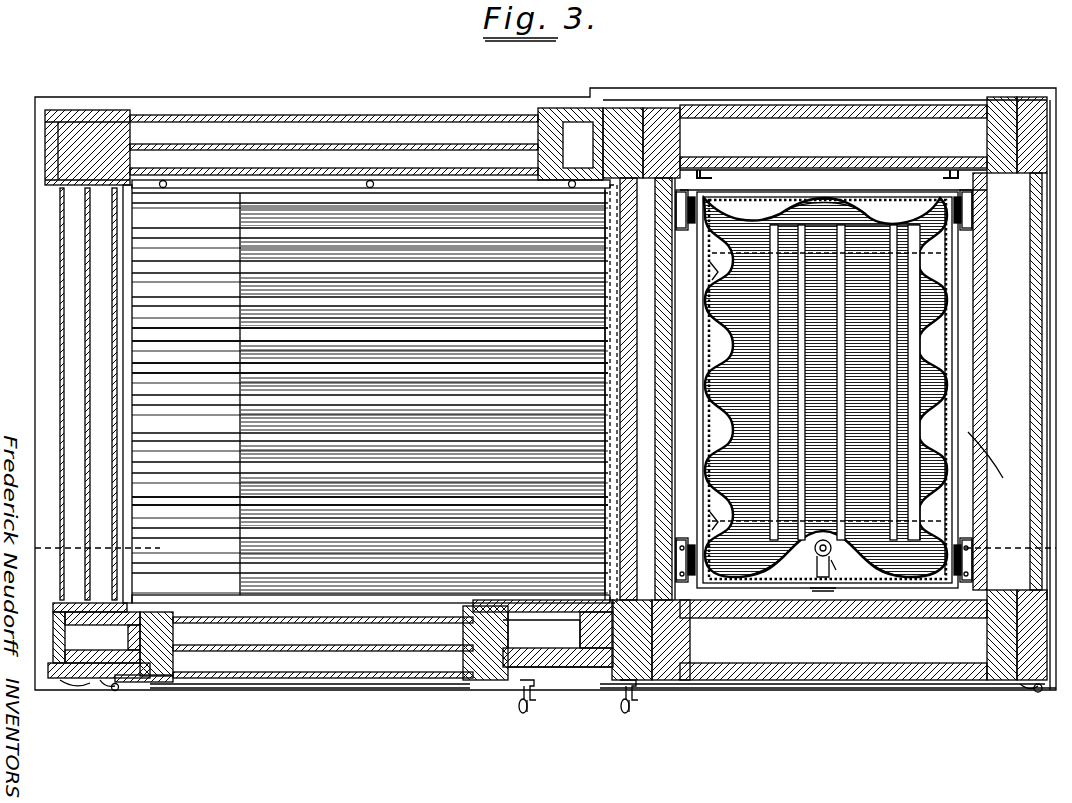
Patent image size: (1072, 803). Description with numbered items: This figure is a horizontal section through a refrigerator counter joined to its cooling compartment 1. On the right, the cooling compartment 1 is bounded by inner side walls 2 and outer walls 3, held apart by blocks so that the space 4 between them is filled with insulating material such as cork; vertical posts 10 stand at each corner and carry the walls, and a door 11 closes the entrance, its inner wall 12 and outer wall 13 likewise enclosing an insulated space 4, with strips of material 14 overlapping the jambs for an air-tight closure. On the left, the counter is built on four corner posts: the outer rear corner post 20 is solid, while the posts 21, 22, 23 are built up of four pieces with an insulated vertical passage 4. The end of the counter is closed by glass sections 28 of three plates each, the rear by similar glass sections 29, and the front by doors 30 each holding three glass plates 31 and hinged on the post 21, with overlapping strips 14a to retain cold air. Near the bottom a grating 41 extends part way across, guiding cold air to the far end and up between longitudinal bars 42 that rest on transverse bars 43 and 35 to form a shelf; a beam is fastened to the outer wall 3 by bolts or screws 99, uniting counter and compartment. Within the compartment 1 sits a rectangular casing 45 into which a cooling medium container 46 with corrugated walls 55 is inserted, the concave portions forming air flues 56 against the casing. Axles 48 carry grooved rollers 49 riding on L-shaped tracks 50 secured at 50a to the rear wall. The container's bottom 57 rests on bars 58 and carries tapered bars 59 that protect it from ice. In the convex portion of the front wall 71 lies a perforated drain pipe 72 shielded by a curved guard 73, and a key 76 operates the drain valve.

The cooling compartment 1 is at (544, 496).
The inner side walls 2 is at (868, 170).
The outer walls 3 is at (933, 108).
The space 4 is at (554, 388).
The vertical posts 10 is at (645, 128).
The door 11 is at (846, 690).
The inner wall 12 is at (783, 612).
The outer wall 13 is at (786, 672).
The strips of material 14 is at (690, 702).
The overlapping strips 14a is at (170, 682).
The outer rear corner post 20 is at (106, 130).
The front corner post 21 is at (116, 694).
The front corner post 22 is at (560, 655).
The corner post 23 is at (565, 112).
The glass sections 28 is at (114, 292).
The glass sections 29 is at (327, 168).
The doors 30 is at (358, 690).
The glass plates 31 is at (308, 679).
The horizontal beam 35 is at (612, 322).
The plate or metal grating 41 is at (252, 417).
The bars 42 is at (496, 345).
The transverse bars 43 is at (130, 362).
The rectangular casing 45 is at (946, 332).
The cooling medium container 46 is at (920, 310).
The axles 48 is at (688, 210).
The grooved rollers 49 is at (690, 200).
The L-shaped tracks 50 is at (692, 406).
The track securing point 50a is at (703, 170).
The corrugation 55 is at (822, 200).
The air flues 56 is at (770, 212).
The bottom 57 is at (748, 548).
The bars 58 is at (720, 268).
The longitudinal tapered bars 59 is at (800, 352).
The corrugated front wall 71 is at (846, 572).
The perforated drain pipe 72 is at (771, 567).
The curved guard 73 is at (874, 562).
The key 76 is at (825, 592).
The bolts or screws 99 is at (617, 210).